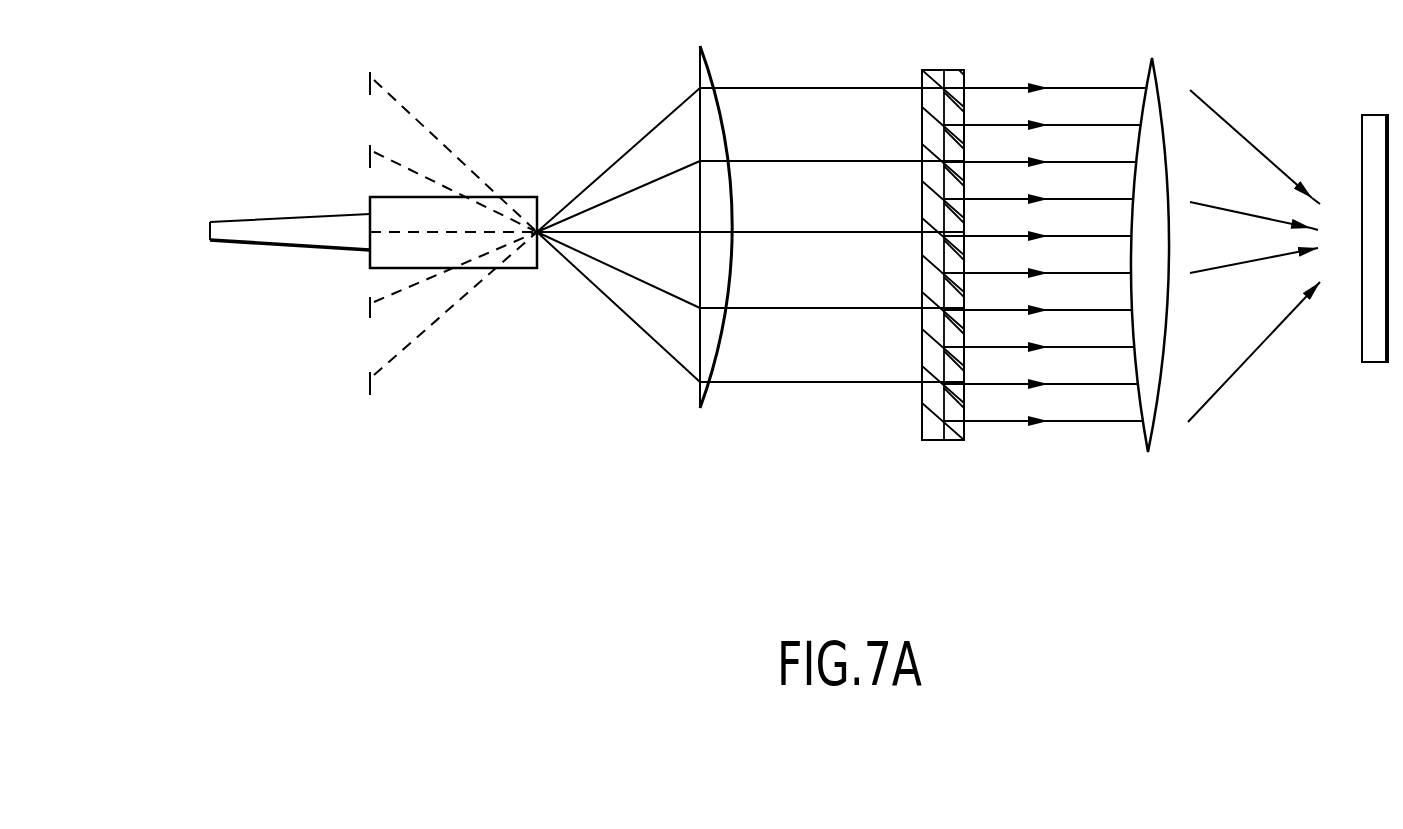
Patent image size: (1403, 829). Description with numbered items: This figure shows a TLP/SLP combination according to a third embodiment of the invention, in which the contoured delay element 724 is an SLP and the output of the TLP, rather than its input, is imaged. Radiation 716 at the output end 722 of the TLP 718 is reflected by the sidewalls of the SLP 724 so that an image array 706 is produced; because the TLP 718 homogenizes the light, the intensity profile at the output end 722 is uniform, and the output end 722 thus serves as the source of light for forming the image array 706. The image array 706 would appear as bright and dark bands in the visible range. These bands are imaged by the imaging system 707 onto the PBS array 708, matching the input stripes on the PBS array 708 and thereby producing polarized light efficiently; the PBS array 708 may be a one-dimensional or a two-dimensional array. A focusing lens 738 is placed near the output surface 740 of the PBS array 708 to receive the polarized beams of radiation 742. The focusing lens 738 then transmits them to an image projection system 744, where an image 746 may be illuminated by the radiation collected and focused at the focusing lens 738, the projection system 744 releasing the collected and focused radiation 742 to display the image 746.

The image array 706 is at (441, 256).
The imaging system 707 is at (750, 251).
The PBS array 708 is at (944, 278).
The radiation 716 is at (203, 233).
The TLP 718 is at (290, 214).
The output end 722 is at (366, 246).
The contoured delay element 724 is at (497, 190).
The focusing lens 738 is at (1150, 279).
The output surface 740 is at (970, 101).
The polarized beams of radiation 742 is at (1055, 235).
The image projection system 744 is at (1377, 264).
The image 746 is at (1356, 125).